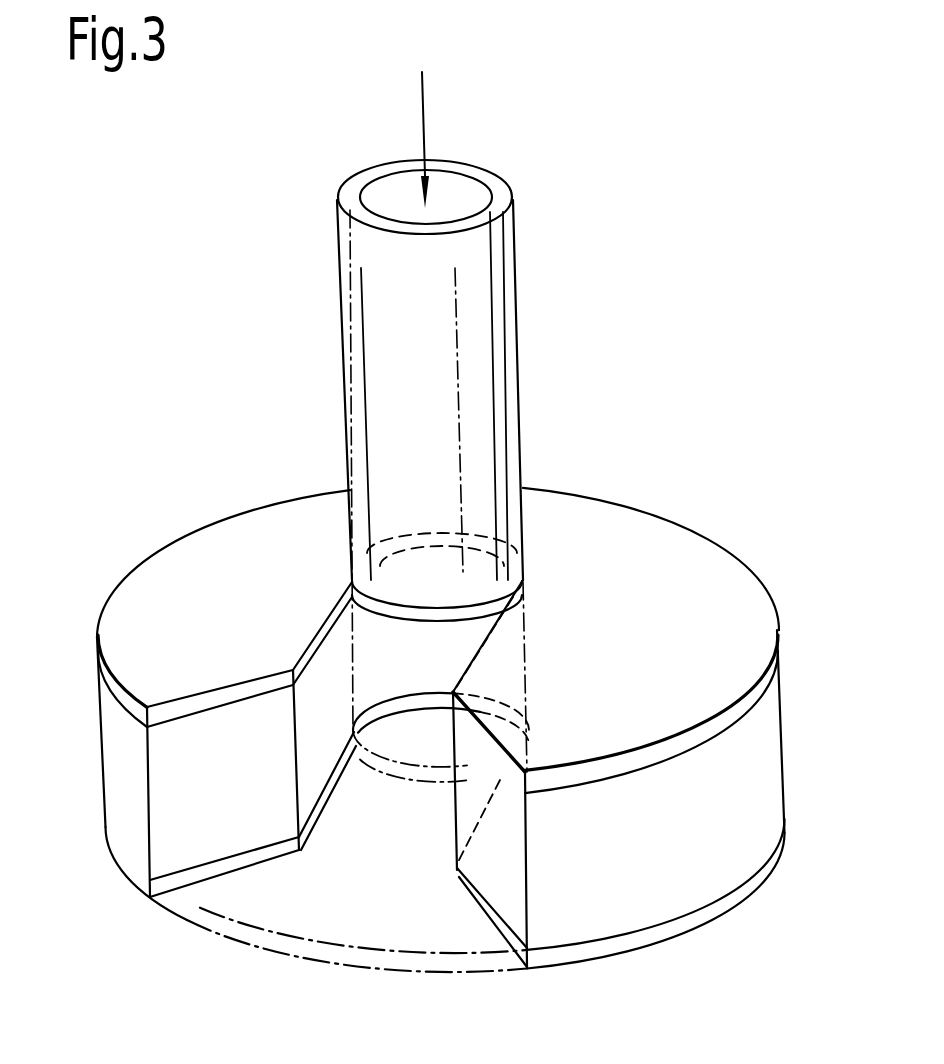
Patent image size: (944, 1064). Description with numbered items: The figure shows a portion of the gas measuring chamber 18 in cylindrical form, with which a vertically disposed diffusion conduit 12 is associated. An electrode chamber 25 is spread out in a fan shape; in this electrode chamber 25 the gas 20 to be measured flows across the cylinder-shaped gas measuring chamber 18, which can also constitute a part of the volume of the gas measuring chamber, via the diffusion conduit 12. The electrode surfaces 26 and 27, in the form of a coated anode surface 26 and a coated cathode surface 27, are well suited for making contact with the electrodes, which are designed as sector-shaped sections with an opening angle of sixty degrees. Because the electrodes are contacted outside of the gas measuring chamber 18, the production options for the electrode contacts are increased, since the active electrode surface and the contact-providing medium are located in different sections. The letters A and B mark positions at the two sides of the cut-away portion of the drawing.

The diffusion conduit 12 is at (388, 812).
The gas measuring chamber 18 is at (483, 358).
The gas to be measured 20 is at (426, 126).
The electrode chamber 25 is at (187, 810).
The coated anode surface 26 is at (738, 890).
The coated cathode surface 27 is at (733, 593).
The section plane A is at (100, 671).
The section plane B is at (780, 660).